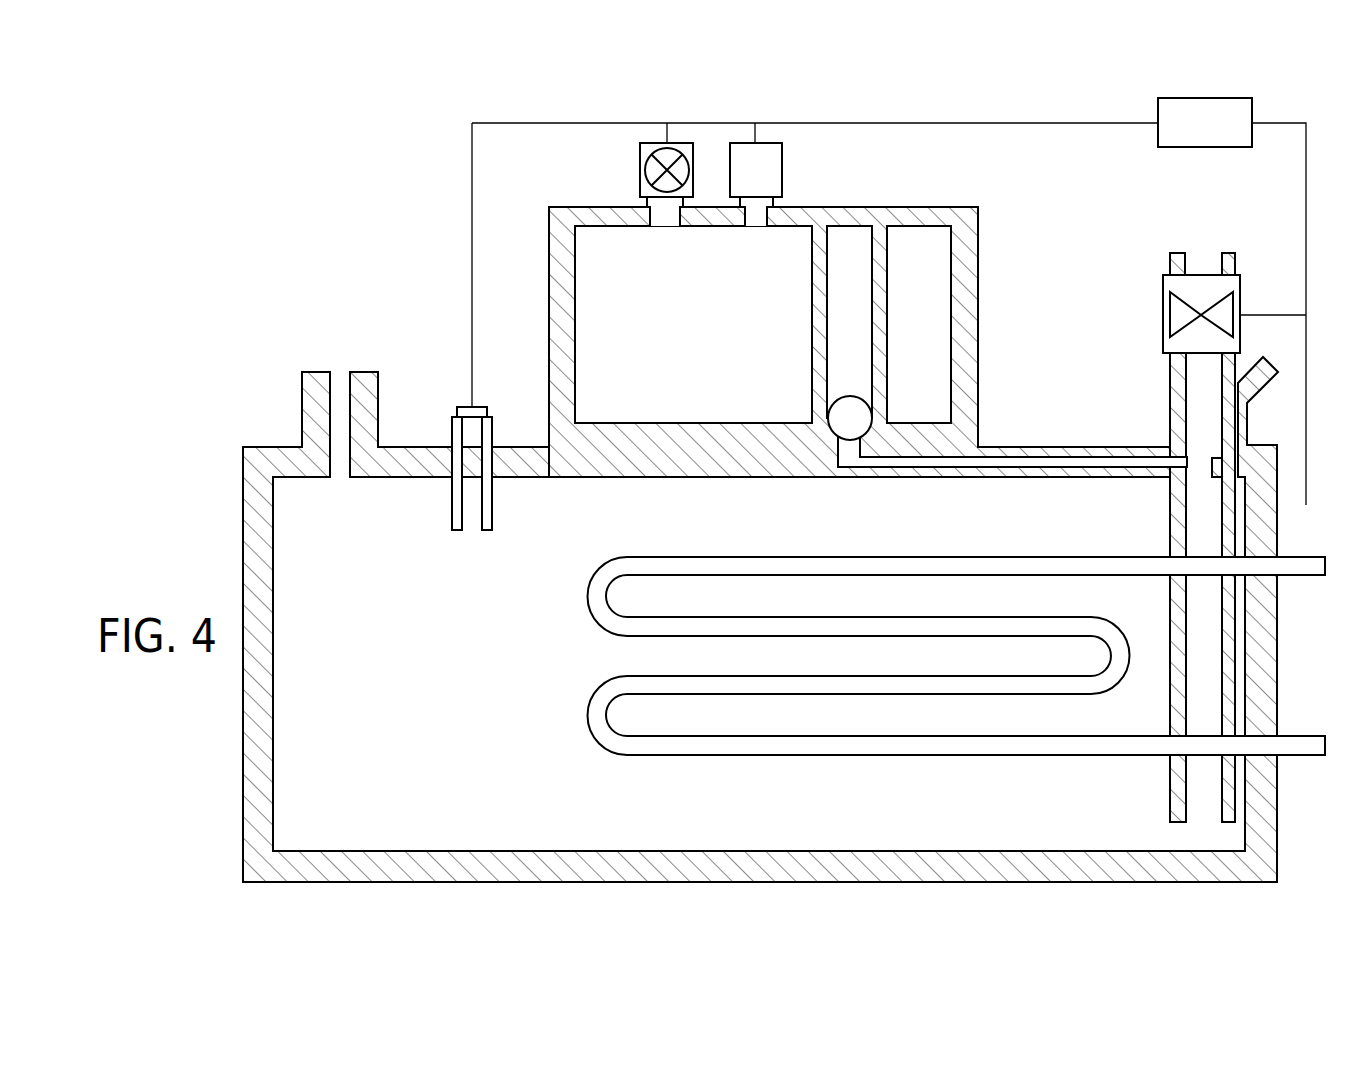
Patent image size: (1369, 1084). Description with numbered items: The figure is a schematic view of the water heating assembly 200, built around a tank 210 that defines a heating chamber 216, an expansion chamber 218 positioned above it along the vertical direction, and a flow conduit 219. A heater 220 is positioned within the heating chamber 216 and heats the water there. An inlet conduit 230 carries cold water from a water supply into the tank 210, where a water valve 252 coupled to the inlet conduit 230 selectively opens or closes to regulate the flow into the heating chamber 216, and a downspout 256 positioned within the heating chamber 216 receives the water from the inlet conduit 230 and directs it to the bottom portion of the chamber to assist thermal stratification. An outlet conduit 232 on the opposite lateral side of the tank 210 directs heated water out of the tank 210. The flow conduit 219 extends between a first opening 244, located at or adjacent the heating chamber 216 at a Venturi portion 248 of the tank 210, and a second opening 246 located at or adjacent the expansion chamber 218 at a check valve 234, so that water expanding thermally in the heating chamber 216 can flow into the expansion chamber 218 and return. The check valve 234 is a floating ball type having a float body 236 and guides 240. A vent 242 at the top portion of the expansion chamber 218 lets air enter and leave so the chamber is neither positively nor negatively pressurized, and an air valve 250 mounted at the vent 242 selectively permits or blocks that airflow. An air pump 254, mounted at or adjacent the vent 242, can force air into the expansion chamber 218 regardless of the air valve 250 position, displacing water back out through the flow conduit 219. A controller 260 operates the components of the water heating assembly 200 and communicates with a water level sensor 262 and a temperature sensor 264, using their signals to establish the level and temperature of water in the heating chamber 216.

The water heating assembly 200 is at (210, 238).
The tank 210 is at (243, 535).
The heating chamber 216 is at (342, 788).
The expansion chamber 218 is at (648, 344).
The flow conduit 219 is at (997, 462).
The heater 220 is at (1310, 748).
The inlet conduit 230 is at (1170, 380).
The outlet conduit 232 is at (378, 410).
The check valve 234 is at (798, 395).
The float body 236 is at (850, 395).
The guides 240 is at (897, 331).
The vent 242 is at (650, 202).
The first opening 244 is at (1187, 471).
The second opening 246 is at (858, 472).
The Venturi portion 248 is at (1203, 456).
The air valve 250 is at (640, 166).
The water valve 252 is at (1163, 307).
The air pump 254 is at (783, 174).
The downspout 256 is at (1235, 663).
The controller 260 is at (889, 301).
The water level sensor 262 is at (450, 441).
The temperature sensor 264 is at (527, 428).